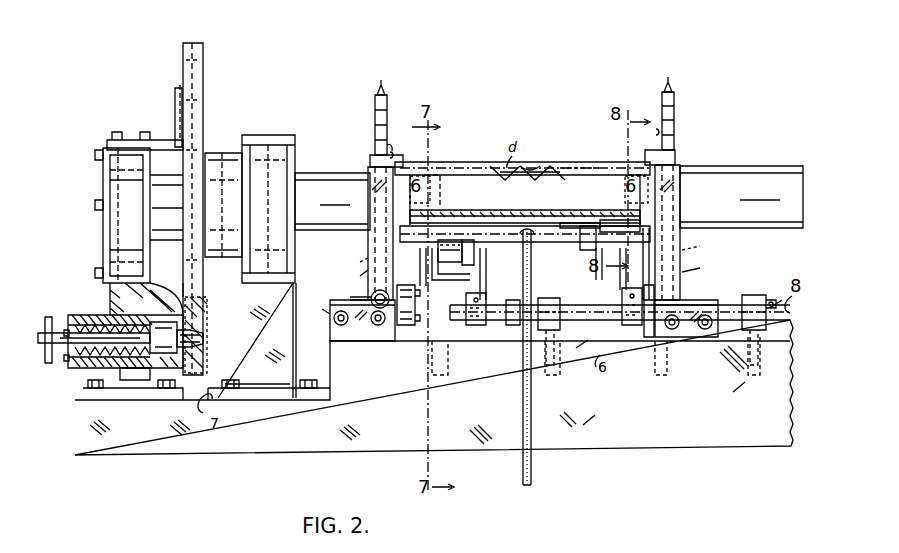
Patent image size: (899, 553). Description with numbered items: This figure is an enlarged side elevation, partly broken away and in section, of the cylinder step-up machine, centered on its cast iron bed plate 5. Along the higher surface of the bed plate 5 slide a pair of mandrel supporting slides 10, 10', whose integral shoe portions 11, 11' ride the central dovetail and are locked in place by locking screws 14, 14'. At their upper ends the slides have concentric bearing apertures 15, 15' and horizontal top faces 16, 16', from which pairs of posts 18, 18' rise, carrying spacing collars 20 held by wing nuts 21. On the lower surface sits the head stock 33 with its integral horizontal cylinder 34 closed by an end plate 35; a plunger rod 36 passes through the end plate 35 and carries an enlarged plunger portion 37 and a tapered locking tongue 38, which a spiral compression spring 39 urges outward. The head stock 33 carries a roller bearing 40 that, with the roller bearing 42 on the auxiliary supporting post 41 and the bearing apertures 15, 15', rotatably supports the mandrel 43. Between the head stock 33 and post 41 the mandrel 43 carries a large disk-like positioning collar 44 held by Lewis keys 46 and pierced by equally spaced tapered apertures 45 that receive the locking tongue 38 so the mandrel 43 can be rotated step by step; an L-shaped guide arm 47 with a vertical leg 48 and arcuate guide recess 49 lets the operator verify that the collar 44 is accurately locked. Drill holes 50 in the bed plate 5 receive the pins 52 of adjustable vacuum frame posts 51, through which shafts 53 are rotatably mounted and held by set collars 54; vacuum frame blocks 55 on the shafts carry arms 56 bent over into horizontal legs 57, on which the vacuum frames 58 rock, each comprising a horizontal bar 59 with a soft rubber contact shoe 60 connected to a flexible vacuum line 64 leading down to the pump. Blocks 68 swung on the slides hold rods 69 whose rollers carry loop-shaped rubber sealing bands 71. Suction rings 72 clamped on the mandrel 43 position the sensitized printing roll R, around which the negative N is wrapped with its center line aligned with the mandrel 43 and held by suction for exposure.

The bed plate 5 is at (600, 445).
The mandrel supporting slide 10 is at (364, 220).
The mandrel supporting slide 10' is at (687, 212).
The shoe portion 11 is at (354, 307).
The shoe portion 11' is at (696, 306).
The locking screw 14 is at (359, 347).
The locking screw 14' is at (688, 345).
The bearing aperture 15 is at (347, 257).
The bearing aperture 15' is at (704, 247).
The horizontal top face 16 is at (377, 146).
The horizontal top face 16' is at (683, 132).
The post 18 is at (349, 273).
The post 18' is at (704, 268).
The spacing collar 20 is at (410, 103).
The wing nut 21 is at (384, 88).
The head stock 33 is at (128, 296).
The cylinder 34 is at (86, 360).
The end plate 35 is at (85, 362).
The plunger rod 36 is at (38, 336).
The plunger portion 37 is at (165, 327).
The tapered locking tongue 38 is at (200, 336).
The spiral compression spring 39 is at (140, 372).
The roller bearing 40 is at (132, 180).
The auxiliary supporting post 41 is at (268, 392).
The roller bearing 42 is at (268, 158).
The mandrel 43 is at (313, 185).
The positioning collar 44 is at (198, 55).
The tapered aperture 45 is at (200, 72).
The Lewis key 46 is at (221, 187).
The L-shaped guide arm 47 is at (166, 144).
The vertical leg 48 is at (174, 105).
The guide recess 49 is at (182, 92).
The drill hole 50 is at (440, 376).
The vacuum frame post 51 is at (548, 298).
The pin 52 is at (566, 352).
The shaft 53 is at (583, 310).
The set collar 54 is at (510, 300).
The vacuum frame block 55 is at (470, 310).
The arm 56 is at (505, 268).
The horizontal leg 57 is at (473, 248).
The vacuum frame 58 is at (489, 206).
The horizontal bar 59 is at (564, 223).
The soft rubber contact shoe 60 is at (585, 220).
The flexible vacuum line 64 is at (522, 412).
The block 68 is at (412, 318).
The rod 69 is at (648, 258).
The rubber sealing band 71 is at (450, 260).
The suction ring 72 is at (435, 176).
The negative N is at (478, 166).
The sensitized printing roll R is at (586, 164).